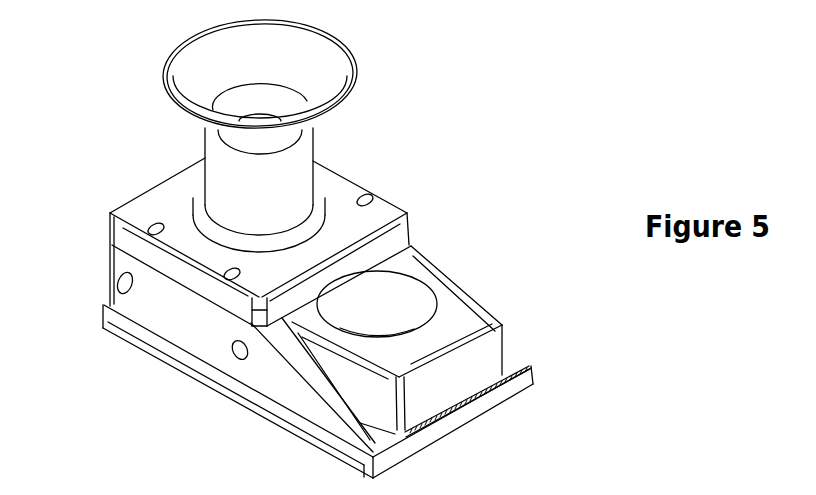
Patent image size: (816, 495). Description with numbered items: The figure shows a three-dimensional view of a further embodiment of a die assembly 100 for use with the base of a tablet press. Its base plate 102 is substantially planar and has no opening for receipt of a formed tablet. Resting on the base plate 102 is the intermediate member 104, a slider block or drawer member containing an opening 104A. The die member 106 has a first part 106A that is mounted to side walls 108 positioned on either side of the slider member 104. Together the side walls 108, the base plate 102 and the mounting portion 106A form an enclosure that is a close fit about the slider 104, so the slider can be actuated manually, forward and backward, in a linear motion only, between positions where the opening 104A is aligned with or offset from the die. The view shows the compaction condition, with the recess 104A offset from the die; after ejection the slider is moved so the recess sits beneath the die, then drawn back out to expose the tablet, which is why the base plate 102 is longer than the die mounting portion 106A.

The die assembly 100 is at (549, 100).
The base plate 102 is at (440, 427).
The intermediate member 104 is at (483, 360).
The opening 104A is at (414, 297).
The die member 106 is at (296, 152).
The first part 106A is at (385, 212).
The side walls 108 is at (127, 295).